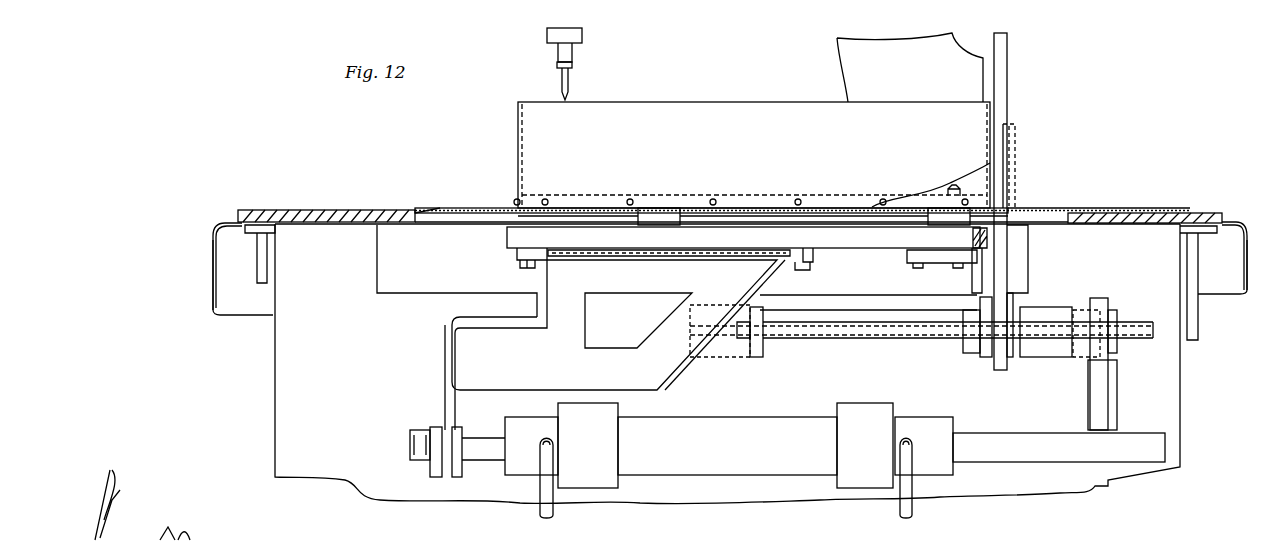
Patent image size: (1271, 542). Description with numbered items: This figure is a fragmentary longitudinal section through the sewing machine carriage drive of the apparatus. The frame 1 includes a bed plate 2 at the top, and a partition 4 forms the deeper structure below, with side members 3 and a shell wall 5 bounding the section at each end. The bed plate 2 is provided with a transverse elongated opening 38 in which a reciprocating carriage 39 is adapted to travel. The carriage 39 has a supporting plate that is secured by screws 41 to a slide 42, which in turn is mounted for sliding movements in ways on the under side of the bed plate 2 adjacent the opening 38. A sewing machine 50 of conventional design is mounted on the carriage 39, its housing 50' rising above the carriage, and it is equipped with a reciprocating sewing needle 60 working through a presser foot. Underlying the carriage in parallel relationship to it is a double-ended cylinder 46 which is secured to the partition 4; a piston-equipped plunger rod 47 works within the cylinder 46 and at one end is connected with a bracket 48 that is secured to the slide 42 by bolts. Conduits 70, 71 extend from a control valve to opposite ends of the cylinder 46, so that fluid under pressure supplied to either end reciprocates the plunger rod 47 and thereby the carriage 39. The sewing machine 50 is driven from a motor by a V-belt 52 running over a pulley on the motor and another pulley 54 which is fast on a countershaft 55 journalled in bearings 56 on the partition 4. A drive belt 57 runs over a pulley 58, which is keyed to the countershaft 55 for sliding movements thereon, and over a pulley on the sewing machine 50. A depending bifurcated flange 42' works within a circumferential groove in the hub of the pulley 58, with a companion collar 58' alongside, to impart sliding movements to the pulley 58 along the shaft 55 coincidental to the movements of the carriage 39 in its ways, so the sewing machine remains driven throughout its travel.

The frame 1 is at (244, 324).
The bed plate 2 is at (326, 210).
The side plate 3 is at (262, 248).
The partition 4 is at (283, 386).
The shell wall 5 is at (213, 284).
The transverse elongated opening 38 is at (432, 210).
The reciprocating carriage 39 is at (752, 155).
The screws 41 is at (952, 186).
The slide 42 is at (767, 259).
The depending bifurcated flange 42' is at (868, 280).
The double-ended cylinder 46 is at (729, 445).
The piston-equipped plunger rod 47 is at (482, 455).
The bracket 48 is at (615, 345).
The sewing machine 50 is at (594, 48).
The upper housing 50' is at (910, 67).
The V-belt 52 is at (1100, 397).
The pulley 54 is at (1110, 308).
The countershaft 55 is at (822, 334).
The bearings 56 is at (758, 355).
The drive belt 57 is at (1003, 60).
The pulley 58 is at (1036, 315).
The collar plate 58' is at (965, 346).
The reciprocating sewing needle 60 is at (568, 85).
The conduit 70 is at (903, 500).
The conduit 71 is at (540, 508).